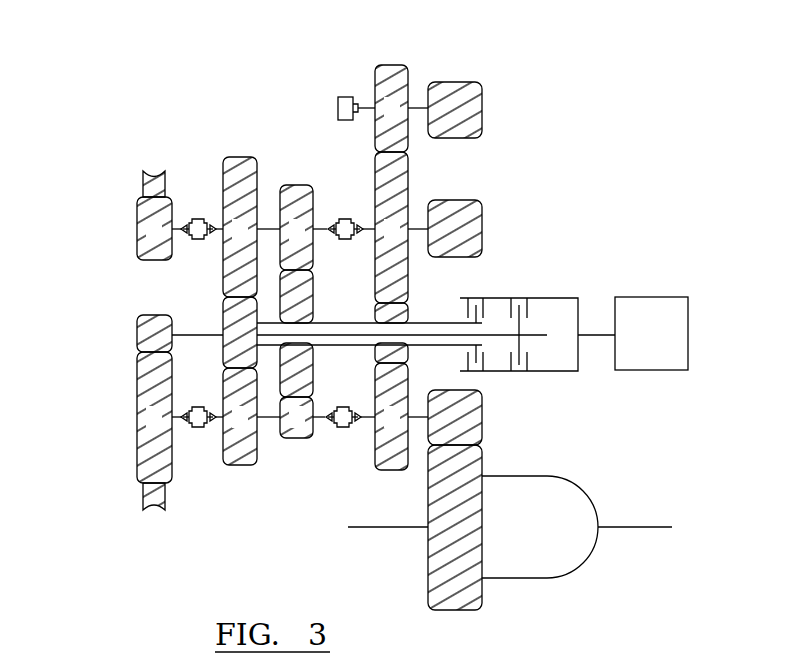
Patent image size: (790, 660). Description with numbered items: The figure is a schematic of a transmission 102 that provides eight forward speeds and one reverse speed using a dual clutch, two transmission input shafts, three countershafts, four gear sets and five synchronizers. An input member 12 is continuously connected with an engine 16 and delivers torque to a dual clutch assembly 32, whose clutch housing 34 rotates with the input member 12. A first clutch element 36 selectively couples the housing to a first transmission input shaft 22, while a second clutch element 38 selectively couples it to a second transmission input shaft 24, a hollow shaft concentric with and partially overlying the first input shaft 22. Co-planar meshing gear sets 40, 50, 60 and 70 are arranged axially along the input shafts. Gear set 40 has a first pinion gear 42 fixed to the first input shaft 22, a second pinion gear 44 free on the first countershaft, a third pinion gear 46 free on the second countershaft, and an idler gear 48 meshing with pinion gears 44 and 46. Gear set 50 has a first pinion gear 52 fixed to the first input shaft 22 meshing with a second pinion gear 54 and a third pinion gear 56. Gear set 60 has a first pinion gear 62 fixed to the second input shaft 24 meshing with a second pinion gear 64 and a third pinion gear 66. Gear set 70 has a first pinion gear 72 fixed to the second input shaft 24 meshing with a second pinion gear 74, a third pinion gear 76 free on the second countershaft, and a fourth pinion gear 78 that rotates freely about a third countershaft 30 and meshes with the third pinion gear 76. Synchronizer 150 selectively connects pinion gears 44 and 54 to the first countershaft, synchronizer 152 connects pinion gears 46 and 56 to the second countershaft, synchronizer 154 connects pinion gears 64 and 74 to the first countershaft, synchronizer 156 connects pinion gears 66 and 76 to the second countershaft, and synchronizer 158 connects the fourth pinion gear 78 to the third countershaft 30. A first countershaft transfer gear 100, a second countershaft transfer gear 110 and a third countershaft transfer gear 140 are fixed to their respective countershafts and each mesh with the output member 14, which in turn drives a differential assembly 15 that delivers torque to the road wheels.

The input member 12 is at (597, 334).
The output member 14 is at (427, 578).
The differential assembly 15 is at (567, 470).
The engine 16 is at (640, 342).
The first transmission input shaft 22 is at (548, 333).
The second transmission input shaft 24 is at (365, 323).
The third countershaft 30 is at (414, 110).
The dual clutch assembly 32 is at (519, 285).
The clutch housing 34 is at (585, 371).
The first clutch element 36 is at (528, 305).
The second clutch element 38 is at (462, 310).
The co-planar gear set 40 is at (153, 527).
The first pinion gear 42 is at (137, 335).
The second pinion gear 44 is at (137, 455).
The third pinion gear 46 is at (137, 230).
The idler gear 48 is at (143, 184).
The co-planar gear set 50 is at (243, 485).
The first pinion gear 52 is at (225, 302).
The second pinion gear 54 is at (258, 445).
The third pinion gear 56 is at (238, 157).
The co-planar gear set 60 is at (298, 462).
The first pinion gear 62 is at (316, 292).
The second pinion gear 64 is at (315, 430).
The third pinion gear 66 is at (296, 185).
The co-planar gear set 70 is at (379, 500).
The first pinion gear 72 is at (410, 315).
The second pinion gear 74 is at (390, 471).
The third pinion gear 76 is at (410, 190).
The fourth pinion gear 78 is at (398, 65).
The first countershaft transfer gear 100 is at (484, 418).
The transmission 102 is at (626, 200).
The second countershaft transfer gear 110 is at (482, 207).
The third countershaft transfer gear 140 is at (482, 90).
The synchronizer 150 is at (198, 430).
The synchronizer 152 is at (197, 217).
The synchronizer 154 is at (350, 430).
The synchronizer 156 is at (345, 218).
The synchronizer 158 is at (343, 97).